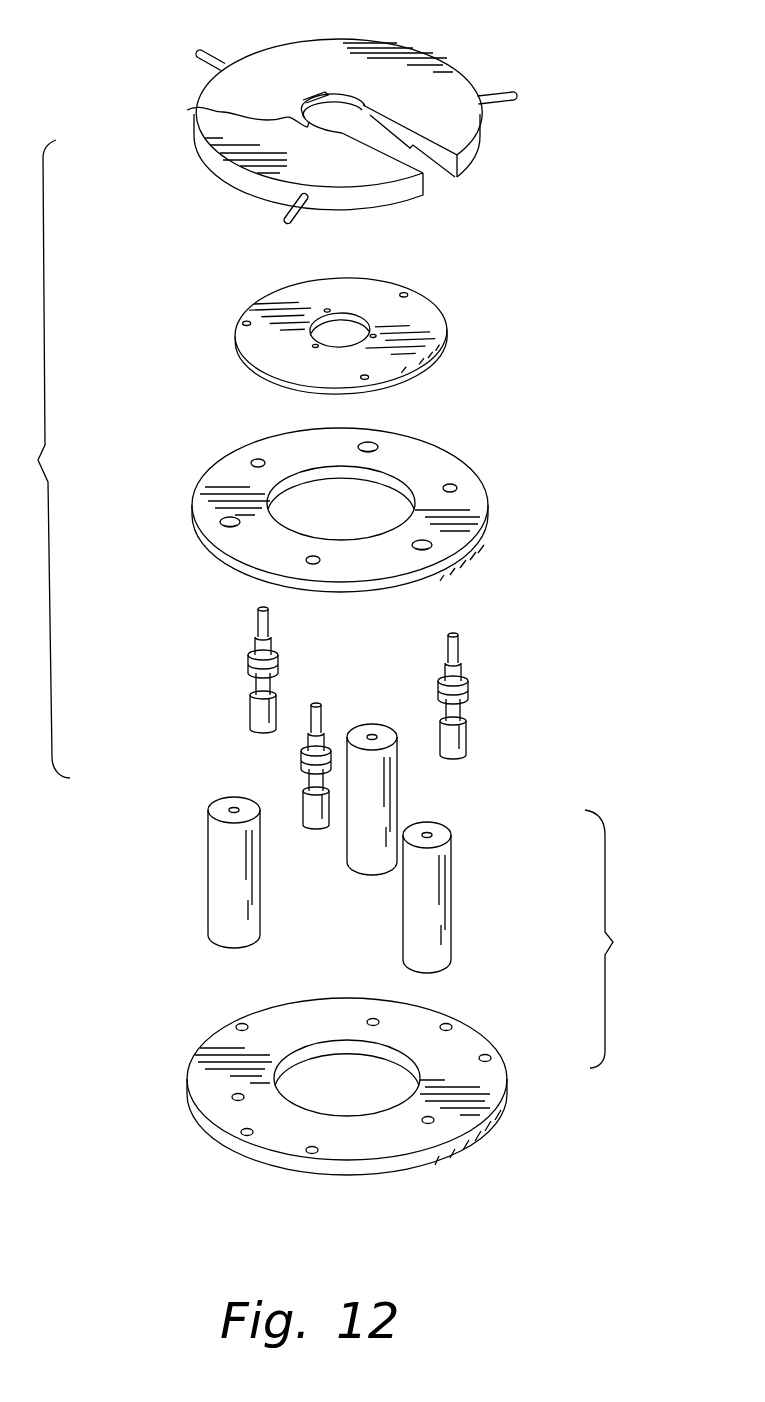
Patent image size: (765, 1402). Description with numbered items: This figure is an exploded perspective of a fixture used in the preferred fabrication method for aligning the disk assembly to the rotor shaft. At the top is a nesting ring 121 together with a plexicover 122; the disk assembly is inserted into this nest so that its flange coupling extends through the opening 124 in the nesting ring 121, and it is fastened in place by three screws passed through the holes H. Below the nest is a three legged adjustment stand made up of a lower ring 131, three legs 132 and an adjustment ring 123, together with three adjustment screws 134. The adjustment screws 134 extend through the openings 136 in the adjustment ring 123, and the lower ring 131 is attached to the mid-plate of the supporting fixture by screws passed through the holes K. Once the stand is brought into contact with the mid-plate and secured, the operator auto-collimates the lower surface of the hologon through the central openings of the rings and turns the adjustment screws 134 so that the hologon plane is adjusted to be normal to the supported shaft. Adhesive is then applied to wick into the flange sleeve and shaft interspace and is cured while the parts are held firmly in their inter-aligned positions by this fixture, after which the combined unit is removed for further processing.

The nesting ring 121 is at (427, 112).
The plexicover 122 is at (500, 321).
The adjustment ring 123 is at (400, 517).
The opening 124 is at (187, 110).
The lower ring 131 is at (418, 1106).
The legs 132 is at (460, 828).
The adjustment screws 134 is at (279, 668).
The opening 136 is at (258, 460).
The holes H is at (303, 100).
The holes K is at (243, 1024).